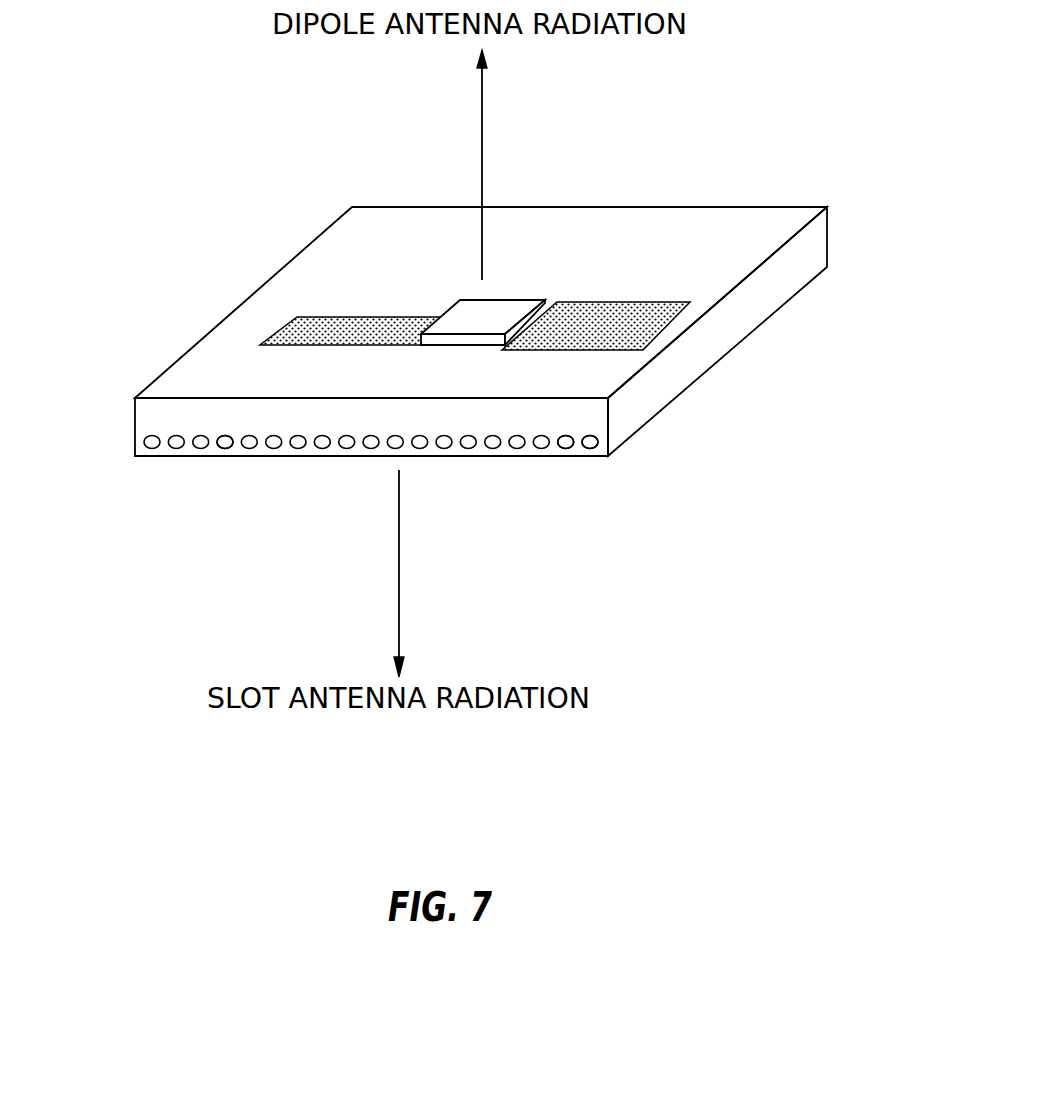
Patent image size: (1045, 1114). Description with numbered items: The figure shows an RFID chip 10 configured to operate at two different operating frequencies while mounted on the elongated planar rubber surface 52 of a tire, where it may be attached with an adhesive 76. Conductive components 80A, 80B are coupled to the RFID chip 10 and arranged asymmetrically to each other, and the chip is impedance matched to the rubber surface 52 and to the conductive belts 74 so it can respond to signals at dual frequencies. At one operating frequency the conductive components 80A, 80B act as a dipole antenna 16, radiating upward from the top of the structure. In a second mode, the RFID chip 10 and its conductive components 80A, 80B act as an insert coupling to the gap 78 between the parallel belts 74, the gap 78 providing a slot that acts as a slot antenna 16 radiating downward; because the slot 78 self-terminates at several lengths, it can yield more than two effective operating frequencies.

The RFID chip 10 is at (503, 307).
The antenna 16 is at (185, 348).
The elongated planar rubber surface 52 is at (747, 337).
The conductive belt 74 is at (200, 448).
The adhesive 76 is at (413, 353).
The gap 78 is at (236, 437).
The conductive component 80A is at (297, 320).
The conductive component 80B is at (663, 316).